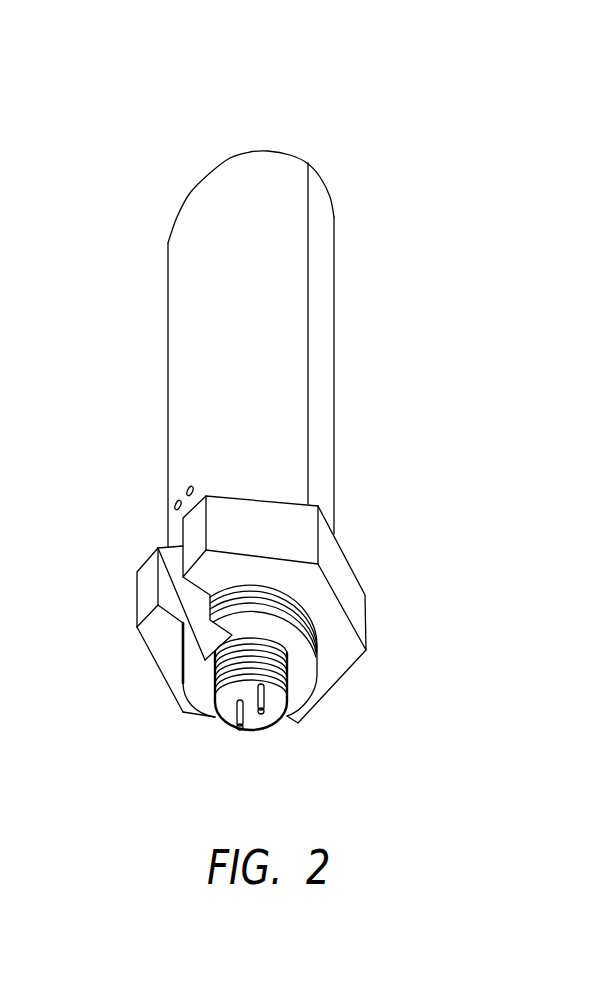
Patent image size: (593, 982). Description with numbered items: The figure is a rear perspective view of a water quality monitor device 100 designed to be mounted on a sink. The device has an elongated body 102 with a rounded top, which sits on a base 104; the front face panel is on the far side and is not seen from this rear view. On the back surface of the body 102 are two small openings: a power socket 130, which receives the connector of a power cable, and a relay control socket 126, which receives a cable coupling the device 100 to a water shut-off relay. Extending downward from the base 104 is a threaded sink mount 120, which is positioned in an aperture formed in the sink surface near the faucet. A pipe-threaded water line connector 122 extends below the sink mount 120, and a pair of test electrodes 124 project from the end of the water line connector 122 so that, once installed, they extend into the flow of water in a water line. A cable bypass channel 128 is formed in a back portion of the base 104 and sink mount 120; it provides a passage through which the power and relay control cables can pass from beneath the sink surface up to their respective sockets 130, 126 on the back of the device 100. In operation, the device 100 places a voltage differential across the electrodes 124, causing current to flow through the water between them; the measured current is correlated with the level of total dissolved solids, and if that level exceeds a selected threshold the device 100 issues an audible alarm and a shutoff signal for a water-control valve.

The water quality monitor device 100 is at (323, 100).
The body 102 is at (204, 318).
The base 104 is at (345, 578).
The threaded sink mount 120 is at (300, 676).
The pipe-threaded water line connector 122 is at (227, 698).
The test electrodes 124 is at (233, 728).
The relay control socket 126 is at (187, 489).
The cable bypass channel 128 is at (175, 598).
The power socket 130 is at (175, 503).